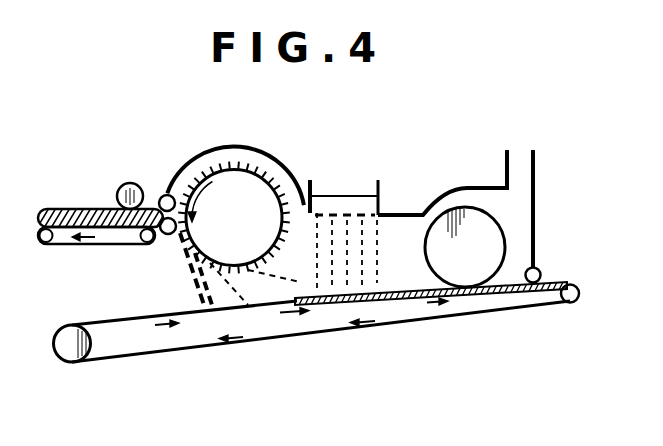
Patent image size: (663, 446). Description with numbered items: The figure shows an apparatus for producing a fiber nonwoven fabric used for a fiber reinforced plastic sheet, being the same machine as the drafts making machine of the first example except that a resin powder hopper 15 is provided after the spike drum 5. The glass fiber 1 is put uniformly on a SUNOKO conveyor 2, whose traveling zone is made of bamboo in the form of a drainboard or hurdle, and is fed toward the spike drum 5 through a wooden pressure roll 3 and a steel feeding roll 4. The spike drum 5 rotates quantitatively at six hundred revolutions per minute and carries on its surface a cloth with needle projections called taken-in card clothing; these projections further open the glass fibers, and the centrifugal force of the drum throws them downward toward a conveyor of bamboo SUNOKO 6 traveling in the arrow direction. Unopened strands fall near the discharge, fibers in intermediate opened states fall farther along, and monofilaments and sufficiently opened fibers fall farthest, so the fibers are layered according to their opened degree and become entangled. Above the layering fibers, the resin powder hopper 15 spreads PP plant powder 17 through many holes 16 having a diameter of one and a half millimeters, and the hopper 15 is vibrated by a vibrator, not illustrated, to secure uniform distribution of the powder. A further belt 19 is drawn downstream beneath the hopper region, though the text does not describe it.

The glass fiber 1 is at (62, 208).
The SUNOKO conveyor 2 is at (77, 252).
The wooden pressure roll 3 is at (125, 184).
The steel feeding roll 4 is at (162, 195).
The spike drum 5 is at (237, 205).
The conveyor of bamboo SUNOKO 6 is at (126, 365).
The resin powder hopper 15 is at (382, 192).
The holes 16 is at (367, 215).
The PP plant powder 17 is at (352, 178).
The transfer conveyor belt 19 is at (563, 283).